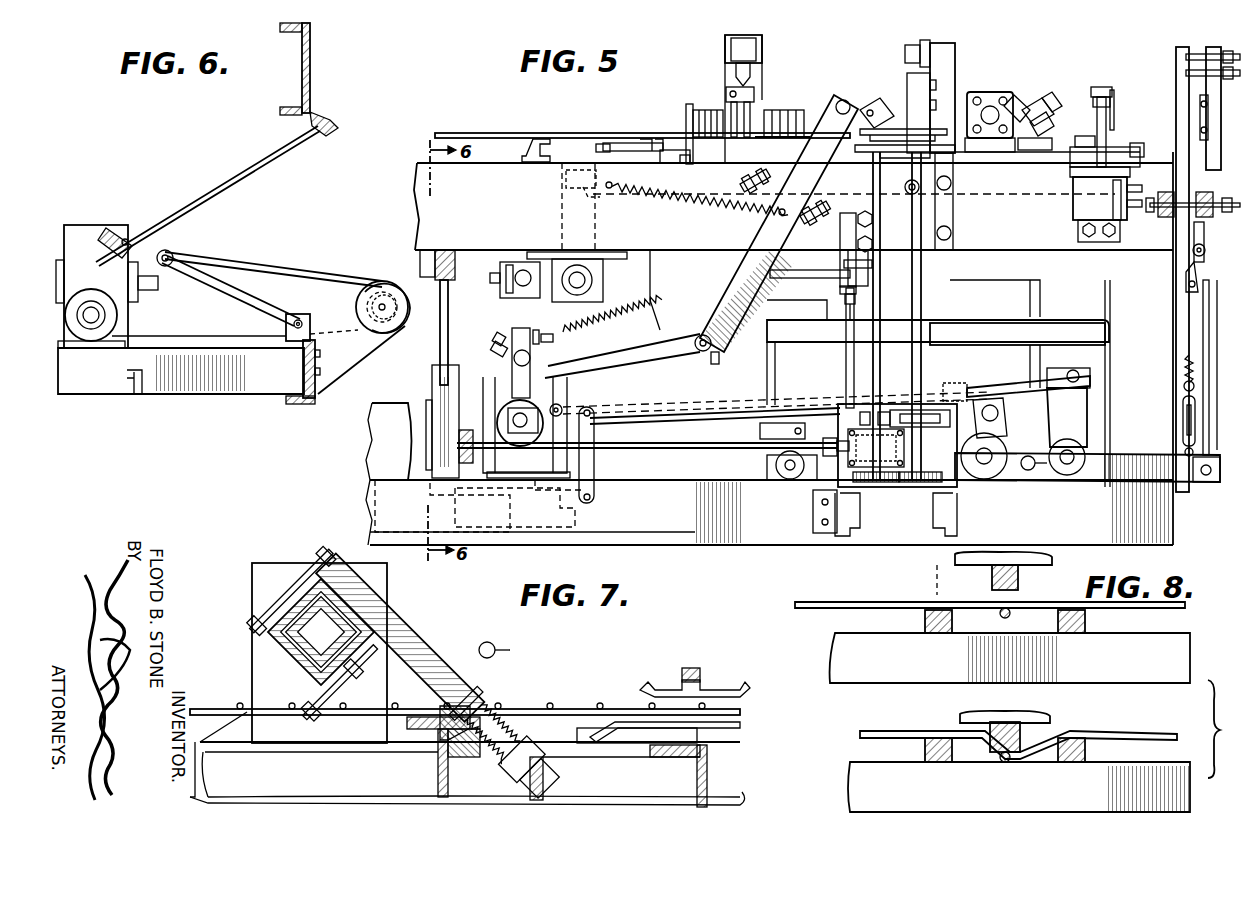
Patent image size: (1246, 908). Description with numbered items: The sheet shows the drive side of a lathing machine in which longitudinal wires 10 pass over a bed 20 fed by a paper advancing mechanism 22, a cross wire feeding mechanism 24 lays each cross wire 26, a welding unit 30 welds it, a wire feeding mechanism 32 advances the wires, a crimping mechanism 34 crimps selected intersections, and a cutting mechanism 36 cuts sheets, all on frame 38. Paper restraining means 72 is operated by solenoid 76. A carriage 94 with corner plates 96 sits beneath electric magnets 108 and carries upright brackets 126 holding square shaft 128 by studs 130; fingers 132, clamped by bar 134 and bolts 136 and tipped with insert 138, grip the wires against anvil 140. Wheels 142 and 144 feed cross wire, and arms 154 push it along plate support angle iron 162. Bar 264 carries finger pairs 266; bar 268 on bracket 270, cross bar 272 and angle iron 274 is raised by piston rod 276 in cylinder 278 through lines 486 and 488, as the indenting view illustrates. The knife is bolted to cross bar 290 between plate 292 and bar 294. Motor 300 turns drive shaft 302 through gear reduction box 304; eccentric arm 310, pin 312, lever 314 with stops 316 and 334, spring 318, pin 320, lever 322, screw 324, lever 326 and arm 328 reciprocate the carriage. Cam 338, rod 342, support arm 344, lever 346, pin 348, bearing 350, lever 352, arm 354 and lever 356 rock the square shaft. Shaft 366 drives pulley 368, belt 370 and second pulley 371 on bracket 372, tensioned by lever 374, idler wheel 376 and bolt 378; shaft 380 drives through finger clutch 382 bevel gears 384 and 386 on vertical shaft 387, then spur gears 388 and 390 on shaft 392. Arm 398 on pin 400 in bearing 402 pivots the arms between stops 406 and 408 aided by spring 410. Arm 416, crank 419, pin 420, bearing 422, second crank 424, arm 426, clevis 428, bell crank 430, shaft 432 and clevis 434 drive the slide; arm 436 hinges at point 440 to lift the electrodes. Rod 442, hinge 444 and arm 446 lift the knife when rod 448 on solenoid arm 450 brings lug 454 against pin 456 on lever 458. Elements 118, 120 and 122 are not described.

In FIG. 7, the longitudinal wires 10 is at (578, 710).
In FIG. 8, the longitudinal wires 10 is at (1008, 616).
In FIG. 5, the bed 20 is at (580, 130).
In FIG. 5, the paper advancing mechanism 22 is at (784, 102).
In FIG. 5, the cross wire feeding mechanism 24 is at (848, 84).
In FIG. 7, the cross wire 26 is at (546, 708).
In FIG. 8, the cross wire 26 is at (1154, 606).
In FIG. 5, the welding unit 30 is at (958, 52).
In FIG. 5, the wire feeding mechanism 32 is at (1004, 82).
In FIG. 5, the crimping mechanism 34 is at (1106, 80).
In FIG. 5, the cutting mechanism 36 is at (1202, 48).
In FIG. 6, the frame 38 is at (184, 398).
In FIG. 5, the frame 38 is at (724, 544).
In FIG. 5, the paper restraining means 72 is at (770, 54).
In FIG. 5, the solenoid 76 is at (742, 38).
In FIG. 5, the carriage 94 is at (646, 140).
In FIG. 7, the carriage 94 is at (705, 768).
In FIG. 7, the plate 96 is at (697, 740).
In FIG. 5, the electric magnets 108 is at (798, 110).
In FIG. 5, the coil 118 is at (708, 102).
In FIG. 5, the support 120 is at (692, 115).
In FIG. 5, the plate 122 is at (662, 122).
In FIG. 5, the upright bracket 126 is at (1018, 90).
In FIG. 7, the upright bracket 126 is at (262, 566).
In FIG. 7, the square shaft 128 is at (306, 600).
In FIG. 5, the circular stud 130 is at (990, 106).
In FIG. 5, the wire engaging fingers 132 is at (1030, 110).
In FIG. 7, the wire engaging fingers 132 is at (448, 676).
In FIG. 7, the bar 134 is at (272, 654).
In FIG. 7, the bolts 136 is at (270, 604).
In FIG. 7, the hardened steel insert 138 is at (440, 706).
In FIG. 7, the anvil 140 is at (442, 744).
In FIG. 5, the wheel 142 is at (944, 108).
In FIG. 5, the wheel 144 is at (886, 124).
In FIG. 5, the arms 154 is at (758, 230).
In FIG. 5, the angle iron 162 is at (850, 98).
In FIG. 8, the bar 264 is at (1200, 636).
In FIG. 8, the fingers 266 is at (936, 634).
In FIG. 5, the bar 268 is at (1130, 134).
In FIG. 8, the bar 268 is at (1018, 581).
In FIG. 5, the bracket 270 is at (1114, 130).
In FIG. 8, the bracket 270 is at (955, 556).
In FIG. 5, the cross bar 272 is at (1116, 116).
In FIG. 5, the angle iron 274 is at (1108, 106).
In FIG. 5, the piston rod 276 is at (1100, 126).
In FIG. 5, the cylinder 278 is at (1076, 212).
In FIG. 5, the cross bar 290 is at (1200, 122).
In FIG. 5, the plate 292 is at (1194, 57).
In FIG. 5, the bar 294 is at (1194, 73).
In FIG. 5, the motor 300 is at (374, 400).
In FIG. 6, the drive shaft 302 is at (144, 288).
In FIG. 5, the drive shaft 302 is at (522, 426).
In FIG. 6, the gear reduction box 304 is at (82, 234).
In FIG. 5, the gear reduction box 304 is at (496, 344).
In FIG. 5, the eccentric arm 310 is at (540, 388).
In FIG. 5, the pin 312 is at (532, 358).
In FIG. 5, the lever 314 is at (512, 310).
In FIG. 5, the stop 316 is at (546, 334).
In FIG. 5, the spring 318 is at (664, 296).
In FIG. 5, the pin 320 is at (498, 288).
In FIG. 5, the lever 322 is at (546, 264).
In FIG. 5, the screw 324 is at (478, 290).
In FIG. 5, the lever 326 is at (560, 193).
In FIG. 5, the arm 328 is at (610, 201).
In FIG. 5, the second stop 334 is at (500, 338).
In FIG. 5, the cam 338 is at (545, 405).
In FIG. 5, the rod 342 is at (610, 410).
In FIG. 5, the support arm 344 is at (596, 473).
In FIG. 5, the lever 346 is at (1006, 414).
In FIG. 5, the pin 348 is at (985, 466).
In FIG. 5, the bearing 350 is at (998, 472).
In FIG. 5, the lever 352 is at (1030, 472).
In FIG. 5, the arm 354 is at (1030, 364).
In FIG. 5, the lever 356 is at (1046, 102).
In FIG. 6, the drive shaft 366 is at (94, 324).
In FIG. 5, the drive shaft 366 is at (390, 478).
In FIG. 6, the pulley 368 is at (118, 318).
In FIG. 6, the belt 370 is at (254, 270).
In FIG. 5, the belt 370 is at (424, 414).
In FIG. 6, the second pulley 371 is at (392, 290).
In FIG. 5, the second pulley 371 is at (387, 308).
In FIG. 6, the bracket 372 is at (340, 322).
In FIG. 6, the lever 374 is at (222, 292).
In FIG. 5, the lever 374 is at (418, 382).
In FIG. 6, the idler wheel 376 is at (173, 254).
In FIG. 6, the bolt 378 is at (228, 178).
In FIG. 5, the bolt 378 is at (440, 348).
In FIG. 6, the shaft 380 is at (378, 282).
In FIG. 5, the shaft 380 is at (658, 474).
In FIG. 5, the finger clutch 382 is at (840, 418).
In FIG. 5, the bevel gear 384 is at (860, 485).
In FIG. 5, the bevel gear 386 is at (904, 485).
In FIG. 5, the vertical shaft 387 is at (850, 371).
In FIG. 5, the spur gear 388 is at (880, 495).
In FIG. 5, the spur gear 390 is at (942, 492).
In FIG. 5, the shaft 392 is at (924, 358).
In FIG. 5, the arm 398 is at (643, 350).
In FIG. 5, the pin 400 is at (700, 356).
In FIG. 5, the bearing 402 is at (718, 356).
In FIG. 5, the adjustable stop 406 is at (814, 210).
In FIG. 5, the adjustable stop 408 is at (790, 168).
In FIG. 5, the spring 410 is at (676, 204).
In FIG. 5, the arm 416 is at (684, 440).
In FIG. 5, the crank 419 is at (800, 422).
In FIG. 5, the pin 420 is at (790, 474).
In FIG. 5, the bearing 422 is at (782, 460).
In FIG. 5, the second crank 424 is at (808, 480).
In FIG. 5, the arm 426 is at (845, 355).
In FIG. 5, the clevis 428 is at (842, 300).
In FIG. 5, the bell crank 430 is at (845, 291).
In FIG. 5, the shaft 432 is at (864, 260).
In FIG. 5, the clevis 434 is at (856, 210).
In FIG. 5, the arm 436 is at (946, 188).
In FIG. 5, the hinge point 440 is at (946, 213).
In FIG. 5, the rod 442 is at (1205, 335).
In FIG. 5, the hinge 444 is at (1196, 264).
In FIG. 5, the arm 446 is at (1196, 236).
In FIG. 5, the rod 448 is at (1060, 376).
In FIG. 5, the solenoid arm 450 is at (950, 392).
In FIG. 5, the lug 454 is at (1064, 392).
In FIG. 5, the pin 456 is at (1074, 370).
In FIG. 5, the lever 458 is at (1075, 428).
In FIG. 5, the line 486 is at (1150, 210).
In FIG. 5, the line 488 is at (1076, 188).